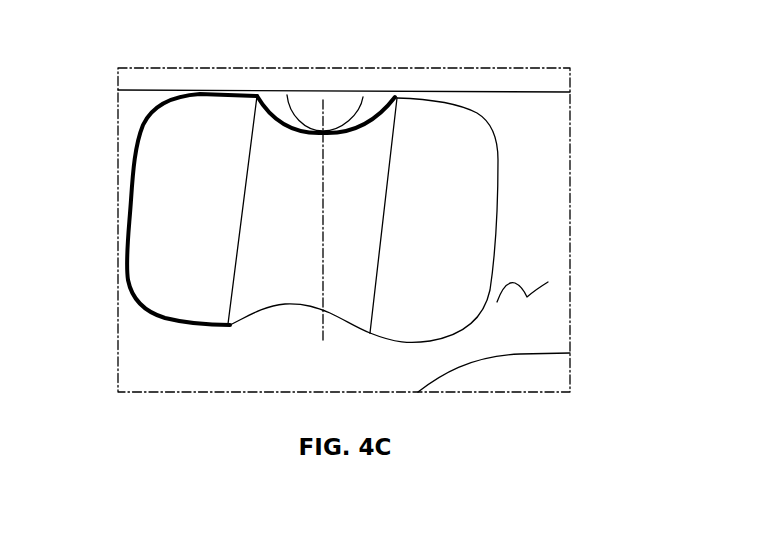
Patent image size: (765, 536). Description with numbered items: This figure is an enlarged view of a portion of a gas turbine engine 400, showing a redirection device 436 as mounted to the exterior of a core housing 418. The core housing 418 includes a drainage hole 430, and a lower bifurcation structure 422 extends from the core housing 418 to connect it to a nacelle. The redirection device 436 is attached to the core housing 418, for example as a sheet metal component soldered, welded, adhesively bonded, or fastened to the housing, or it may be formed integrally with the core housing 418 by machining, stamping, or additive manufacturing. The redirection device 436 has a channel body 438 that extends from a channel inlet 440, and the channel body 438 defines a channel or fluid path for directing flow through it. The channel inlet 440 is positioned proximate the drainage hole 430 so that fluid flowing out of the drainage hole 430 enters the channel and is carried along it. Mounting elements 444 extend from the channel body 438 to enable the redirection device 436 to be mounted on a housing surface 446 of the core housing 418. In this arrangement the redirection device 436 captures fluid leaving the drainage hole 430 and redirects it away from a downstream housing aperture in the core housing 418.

The gas turbine engine 400 is at (574, 45).
The core housing 418 is at (556, 183).
The redirection device 436 is at (204, 88).
The drainage hole 430 is at (335, 90).
The channel inlet 440 is at (277, 120).
The channel body 438 is at (247, 200).
The mounting elements 444 is at (128, 236).
The lower bifurcation structure 422 is at (285, 305).
The housing surface 446 is at (533, 295).